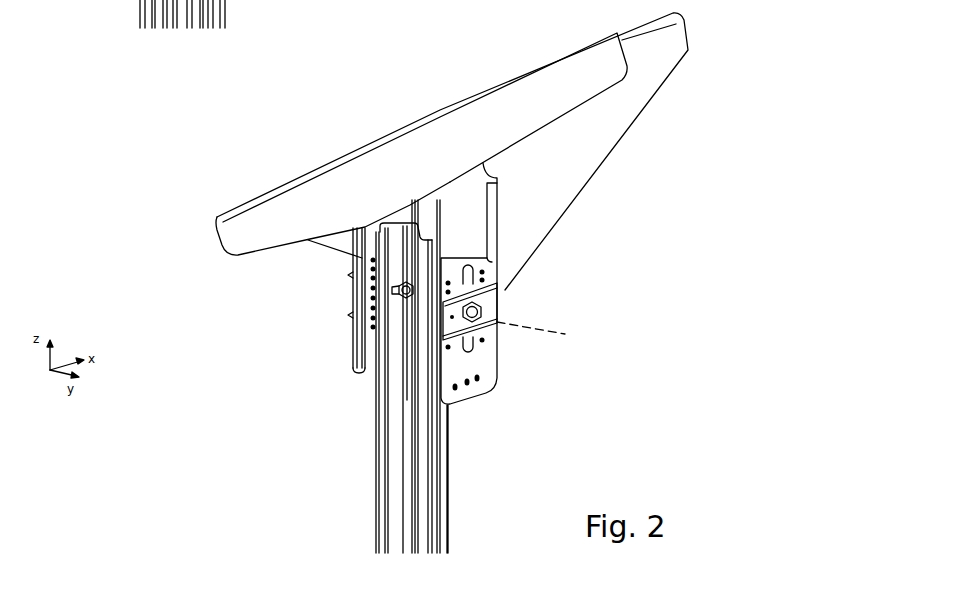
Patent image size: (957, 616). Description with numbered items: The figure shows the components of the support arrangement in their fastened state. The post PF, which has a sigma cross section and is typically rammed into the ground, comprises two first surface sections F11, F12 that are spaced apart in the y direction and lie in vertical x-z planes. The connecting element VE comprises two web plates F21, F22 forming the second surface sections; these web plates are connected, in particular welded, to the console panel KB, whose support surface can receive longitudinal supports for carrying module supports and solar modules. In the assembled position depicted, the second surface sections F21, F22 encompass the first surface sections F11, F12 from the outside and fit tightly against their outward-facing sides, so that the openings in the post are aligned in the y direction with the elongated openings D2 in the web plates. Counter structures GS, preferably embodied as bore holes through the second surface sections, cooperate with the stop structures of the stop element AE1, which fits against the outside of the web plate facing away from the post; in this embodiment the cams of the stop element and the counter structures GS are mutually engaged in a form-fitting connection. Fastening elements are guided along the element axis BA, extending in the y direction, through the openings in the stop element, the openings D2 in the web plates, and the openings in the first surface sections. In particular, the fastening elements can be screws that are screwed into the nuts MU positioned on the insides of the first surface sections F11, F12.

The post PF is at (52, 0).
The connecting element VE is at (163, 210).
The console panel KB is at (587, 145).
The first surface section F11 is at (470, 420).
The first surface section F12 is at (400, 250).
The web plate F21 is at (483, 363).
The web plate F22 is at (363, 373).
The nut MU is at (372, 348).
The counter structure GS is at (483, 268).
The opening D2 is at (468, 277).
The element axis BA is at (530, 330).
The stop element AE1 is at (497, 327).